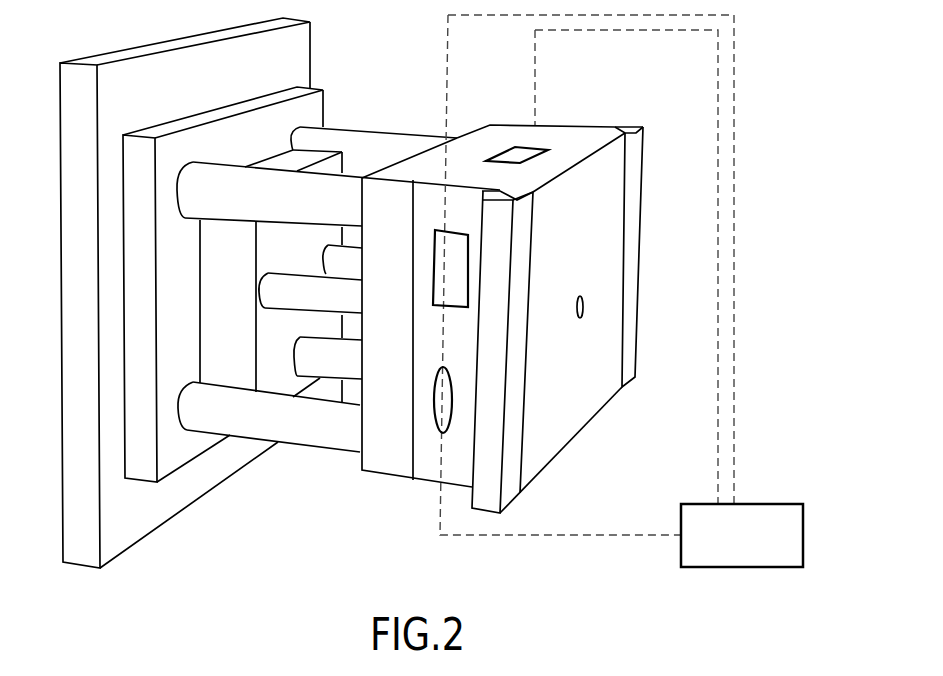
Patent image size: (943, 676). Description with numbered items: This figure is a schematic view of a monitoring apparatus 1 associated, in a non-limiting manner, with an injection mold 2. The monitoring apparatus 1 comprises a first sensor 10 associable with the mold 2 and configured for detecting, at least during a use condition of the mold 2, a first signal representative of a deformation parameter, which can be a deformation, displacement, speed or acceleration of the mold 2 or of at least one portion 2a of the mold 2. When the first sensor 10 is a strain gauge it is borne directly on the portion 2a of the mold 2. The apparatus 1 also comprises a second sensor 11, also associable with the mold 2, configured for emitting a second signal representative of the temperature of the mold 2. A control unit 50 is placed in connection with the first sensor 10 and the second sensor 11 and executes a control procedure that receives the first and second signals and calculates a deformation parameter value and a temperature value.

The monitoring apparatus 1 is at (752, 56).
The mold 2 is at (507, 296).
The portion of the mold 2a is at (572, 133).
The first sensor 10 is at (433, 267).
The second sensor 11 is at (438, 403).
The control unit 50 is at (758, 549).